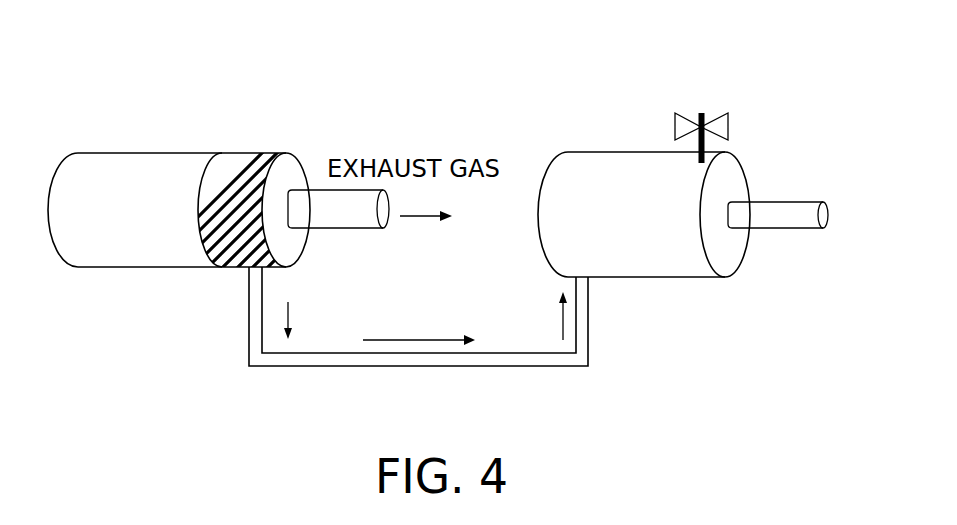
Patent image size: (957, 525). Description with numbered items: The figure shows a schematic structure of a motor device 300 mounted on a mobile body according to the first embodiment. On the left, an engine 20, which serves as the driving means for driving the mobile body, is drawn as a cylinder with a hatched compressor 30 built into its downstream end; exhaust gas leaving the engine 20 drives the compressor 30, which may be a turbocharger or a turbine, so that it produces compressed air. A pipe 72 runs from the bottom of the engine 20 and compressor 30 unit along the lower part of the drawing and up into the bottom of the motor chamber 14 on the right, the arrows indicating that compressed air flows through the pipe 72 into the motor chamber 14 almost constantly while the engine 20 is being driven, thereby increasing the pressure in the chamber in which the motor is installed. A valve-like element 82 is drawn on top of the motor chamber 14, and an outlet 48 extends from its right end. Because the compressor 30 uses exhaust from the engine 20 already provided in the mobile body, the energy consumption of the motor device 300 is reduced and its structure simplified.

The motor device mounted on a mobile body 300 is at (478, 77).
The engine 20 is at (100, 153).
The compressor 30 is at (252, 153).
The motor chamber 14 is at (588, 152).
The outlet pipe 48 is at (803, 228).
The valve 82 is at (728, 123).
The pipe 72 is at (588, 342).